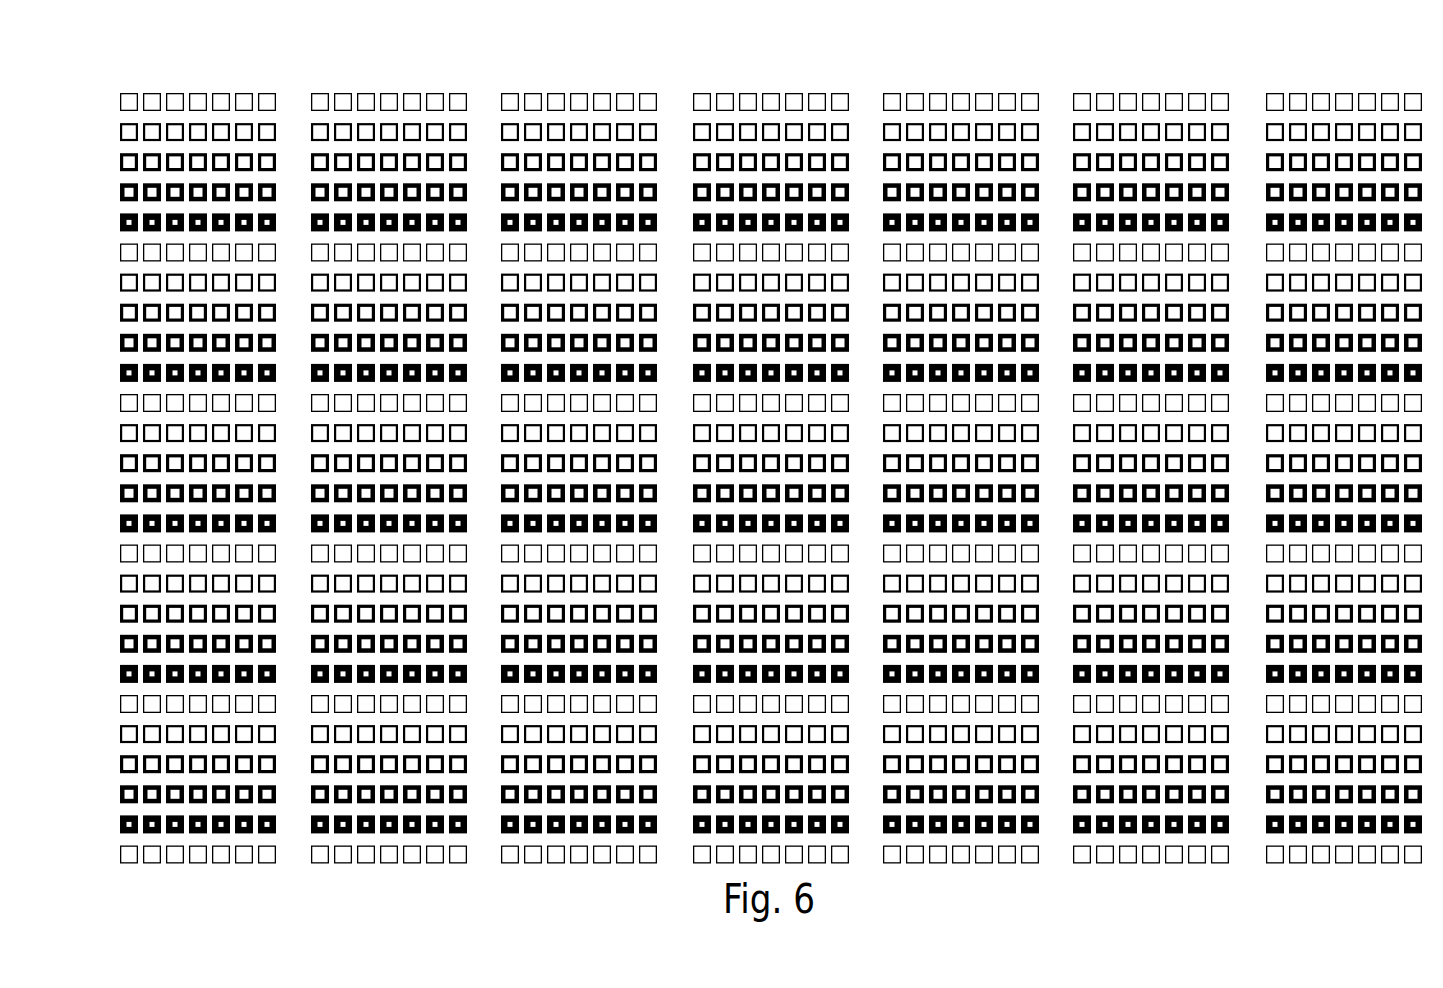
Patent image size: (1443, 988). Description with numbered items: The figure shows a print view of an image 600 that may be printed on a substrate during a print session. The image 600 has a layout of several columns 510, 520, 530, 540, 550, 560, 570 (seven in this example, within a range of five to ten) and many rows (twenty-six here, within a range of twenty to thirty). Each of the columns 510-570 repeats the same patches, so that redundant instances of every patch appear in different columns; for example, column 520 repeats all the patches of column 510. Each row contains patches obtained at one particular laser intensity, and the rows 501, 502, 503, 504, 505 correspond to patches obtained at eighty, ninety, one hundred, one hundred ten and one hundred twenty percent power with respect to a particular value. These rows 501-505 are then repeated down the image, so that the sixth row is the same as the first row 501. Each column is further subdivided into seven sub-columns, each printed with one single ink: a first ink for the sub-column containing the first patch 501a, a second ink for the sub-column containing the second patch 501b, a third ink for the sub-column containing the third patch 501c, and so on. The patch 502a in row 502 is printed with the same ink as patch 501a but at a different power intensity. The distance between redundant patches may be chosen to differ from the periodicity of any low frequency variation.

The row 501 is at (106, 101).
The row 502 is at (106, 131).
The row 503 is at (106, 161).
The row 504 is at (106, 191).
The row 505 is at (106, 221).
The first patch 501a is at (893, 92).
The second patch 501b is at (910, 92).
The third patch 501c is at (936, 92).
The patch 502a is at (883, 131).
The column 510 is at (204, 80).
The column 520 is at (396, 80).
The column 530 is at (586, 80).
The column 540 is at (781, 80).
The column 550 is at (972, 80).
The column 560 is at (1144, 80).
The column 570 is at (1336, 80).
The image 600 is at (1362, 40).